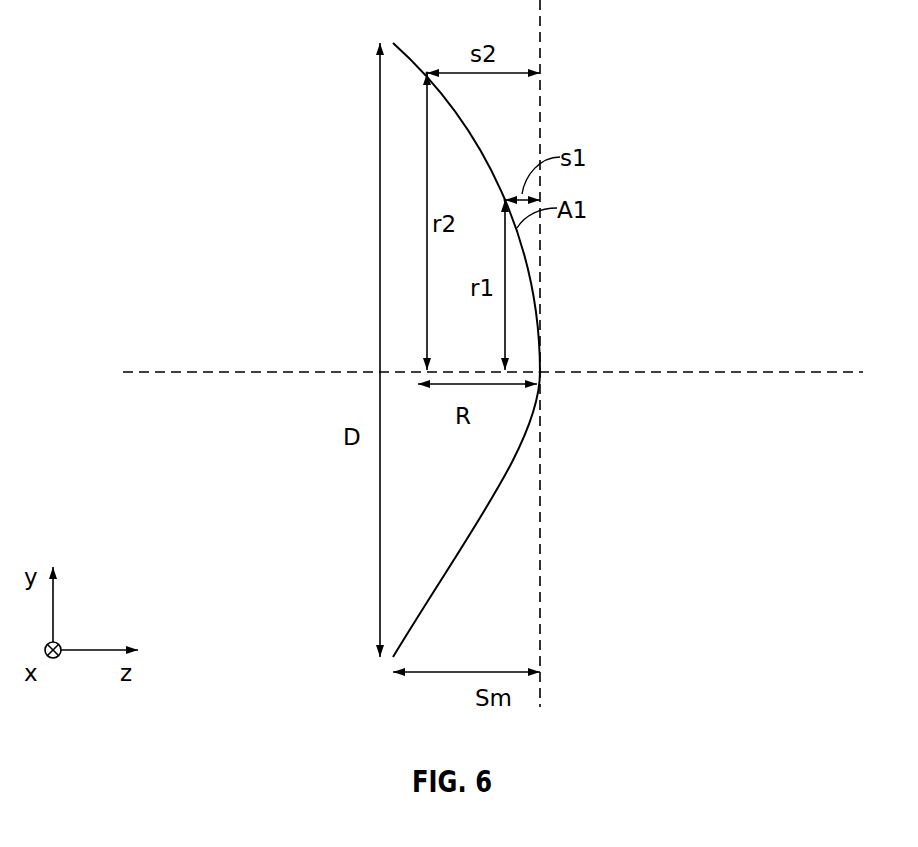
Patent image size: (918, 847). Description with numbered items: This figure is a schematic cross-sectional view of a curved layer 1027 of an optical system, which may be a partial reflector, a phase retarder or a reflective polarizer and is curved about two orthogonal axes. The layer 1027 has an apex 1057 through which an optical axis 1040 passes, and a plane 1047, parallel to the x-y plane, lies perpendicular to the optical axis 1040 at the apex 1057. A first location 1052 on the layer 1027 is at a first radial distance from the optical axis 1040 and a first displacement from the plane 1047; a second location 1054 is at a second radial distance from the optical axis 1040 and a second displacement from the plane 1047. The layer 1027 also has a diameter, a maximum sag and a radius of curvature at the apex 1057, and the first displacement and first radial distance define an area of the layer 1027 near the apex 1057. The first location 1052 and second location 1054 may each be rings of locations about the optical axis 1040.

The layer 1027 is at (502, 462).
The plane 1047 is at (540, 585).
The optical axis 1040 is at (793, 370).
The apex 1057 is at (542, 369).
The second location 1054 is at (427, 66).
The first location 1052 is at (506, 195).